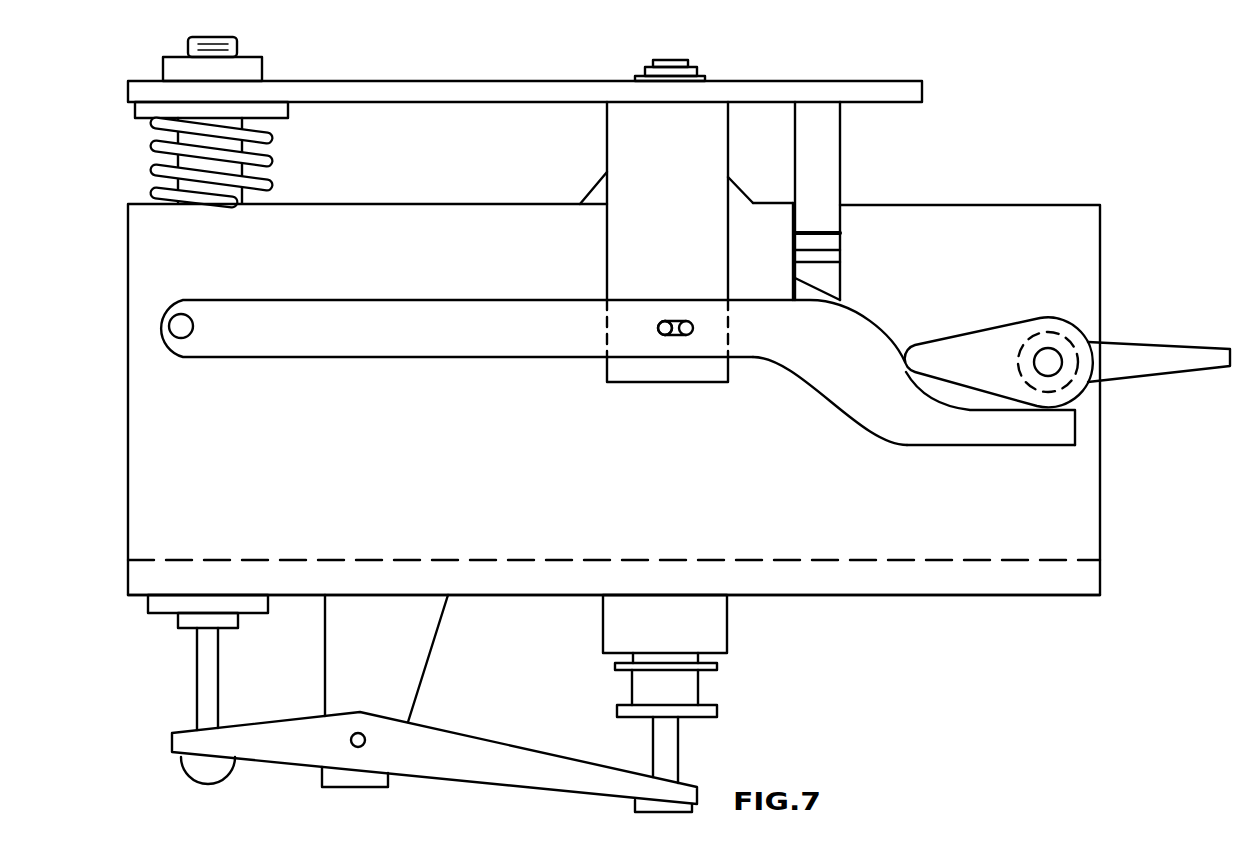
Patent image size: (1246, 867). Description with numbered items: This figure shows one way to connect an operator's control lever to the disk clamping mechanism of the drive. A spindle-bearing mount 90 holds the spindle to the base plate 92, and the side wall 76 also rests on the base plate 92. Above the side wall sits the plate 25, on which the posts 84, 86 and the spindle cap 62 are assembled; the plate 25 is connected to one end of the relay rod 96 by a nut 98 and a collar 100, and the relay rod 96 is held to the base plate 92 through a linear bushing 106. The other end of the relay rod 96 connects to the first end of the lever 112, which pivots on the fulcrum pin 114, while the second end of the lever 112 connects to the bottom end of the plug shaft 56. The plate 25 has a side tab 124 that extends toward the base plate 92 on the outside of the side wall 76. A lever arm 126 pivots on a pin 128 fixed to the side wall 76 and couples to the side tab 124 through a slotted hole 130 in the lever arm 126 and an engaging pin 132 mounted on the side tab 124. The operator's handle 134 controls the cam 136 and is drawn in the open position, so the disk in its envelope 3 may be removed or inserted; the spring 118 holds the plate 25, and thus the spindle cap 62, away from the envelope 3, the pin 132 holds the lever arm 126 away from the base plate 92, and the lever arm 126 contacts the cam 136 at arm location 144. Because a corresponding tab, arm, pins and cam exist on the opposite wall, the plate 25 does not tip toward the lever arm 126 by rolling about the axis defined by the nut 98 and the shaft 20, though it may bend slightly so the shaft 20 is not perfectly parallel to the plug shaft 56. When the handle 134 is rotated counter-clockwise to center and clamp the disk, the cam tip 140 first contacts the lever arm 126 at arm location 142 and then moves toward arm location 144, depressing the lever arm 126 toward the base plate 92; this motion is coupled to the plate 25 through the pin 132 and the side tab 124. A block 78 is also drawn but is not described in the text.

The envelope 3 is at (847, 258).
The shaft 20 is at (672, 59).
The plate 25 is at (928, 82).
The plug shaft 56 is at (681, 755).
The spindle cap 62 is at (597, 183).
The side wall 76 is at (1095, 206).
The support block 78 is at (823, 290).
The post 84 is at (867, 201).
The post 86 is at (940, 155).
The spindle-bearing mount 90 is at (731, 640).
The base plate 92 is at (1104, 579).
The relay rod 96 is at (187, 632).
The nut 98 is at (264, 73).
The collar 100 is at (134, 104).
The linear bushing 106 is at (150, 618).
The lever 112 is at (528, 745).
The fulcrum pin 114 is at (369, 747).
The spring 118 is at (272, 160).
The side tab 124 is at (605, 125).
The lever arm 126 is at (385, 360).
The pin 128 is at (190, 339).
The slotted hole 130 is at (690, 339).
The engaging pin 132 is at (683, 320).
The operator's handle 134 is at (1159, 344).
The cam 136 is at (1040, 317).
The cam tip 140 is at (918, 345).
The arm location 142 is at (901, 370).
The arm location 144 is at (1052, 413).